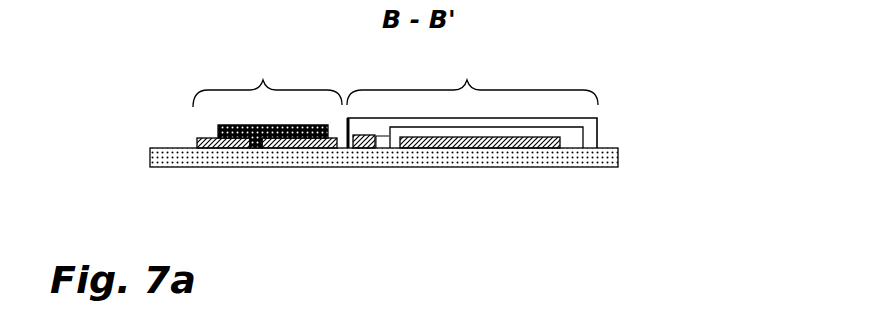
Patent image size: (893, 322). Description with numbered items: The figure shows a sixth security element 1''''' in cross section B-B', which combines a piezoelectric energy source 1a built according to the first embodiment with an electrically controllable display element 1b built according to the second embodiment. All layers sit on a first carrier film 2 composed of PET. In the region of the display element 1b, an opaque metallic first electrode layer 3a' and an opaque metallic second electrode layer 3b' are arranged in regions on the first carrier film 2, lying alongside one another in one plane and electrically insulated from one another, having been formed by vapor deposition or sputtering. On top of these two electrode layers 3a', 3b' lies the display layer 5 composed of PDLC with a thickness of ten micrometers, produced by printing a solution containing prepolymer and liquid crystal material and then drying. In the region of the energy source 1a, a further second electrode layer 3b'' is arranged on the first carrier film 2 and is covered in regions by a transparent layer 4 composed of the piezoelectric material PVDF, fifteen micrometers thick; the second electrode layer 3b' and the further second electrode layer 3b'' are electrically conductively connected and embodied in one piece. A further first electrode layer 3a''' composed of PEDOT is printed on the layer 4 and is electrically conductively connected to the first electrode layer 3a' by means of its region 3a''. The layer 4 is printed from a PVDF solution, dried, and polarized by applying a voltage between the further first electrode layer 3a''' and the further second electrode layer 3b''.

The sixth security element 1''''' is at (697, 100).
The piezoelectric energy source 1a is at (472, 78).
The electrically controllable display element 1b is at (267, 78).
The first carrier film 2 is at (527, 158).
The first electrode layer 3a' is at (223, 178).
The second electrode layer 3b' is at (299, 178).
The region of the further first electrode layer 3a'' is at (366, 176).
The further first electrode layer 3a''' is at (408, 199).
The further second electrode layer 3b'' is at (480, 178).
The layer composed of piezoelectric material 4 is at (587, 132).
The display layer 5 is at (255, 148).